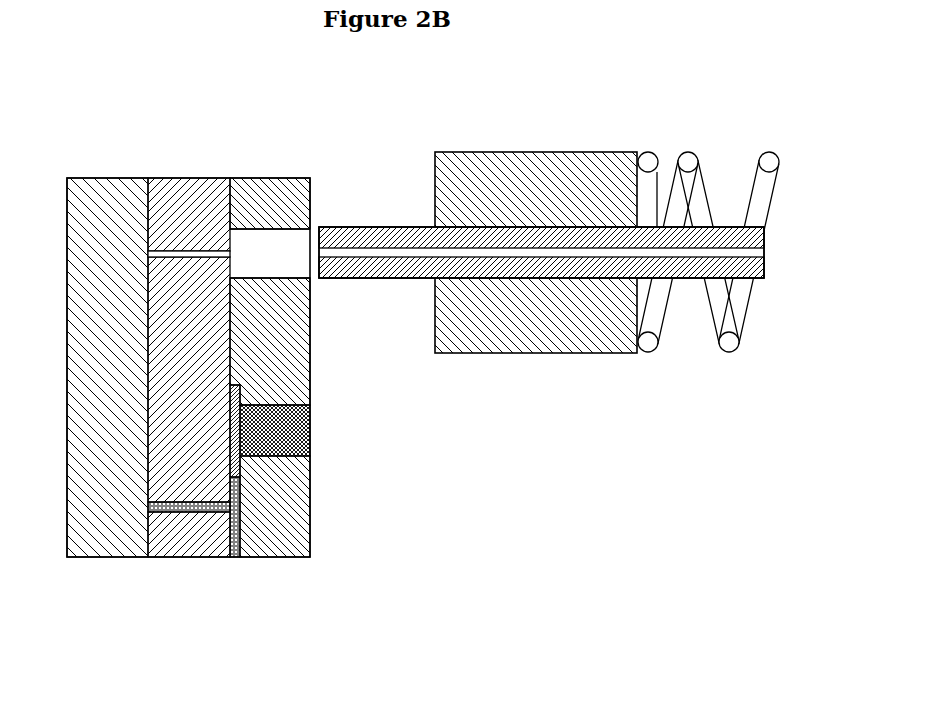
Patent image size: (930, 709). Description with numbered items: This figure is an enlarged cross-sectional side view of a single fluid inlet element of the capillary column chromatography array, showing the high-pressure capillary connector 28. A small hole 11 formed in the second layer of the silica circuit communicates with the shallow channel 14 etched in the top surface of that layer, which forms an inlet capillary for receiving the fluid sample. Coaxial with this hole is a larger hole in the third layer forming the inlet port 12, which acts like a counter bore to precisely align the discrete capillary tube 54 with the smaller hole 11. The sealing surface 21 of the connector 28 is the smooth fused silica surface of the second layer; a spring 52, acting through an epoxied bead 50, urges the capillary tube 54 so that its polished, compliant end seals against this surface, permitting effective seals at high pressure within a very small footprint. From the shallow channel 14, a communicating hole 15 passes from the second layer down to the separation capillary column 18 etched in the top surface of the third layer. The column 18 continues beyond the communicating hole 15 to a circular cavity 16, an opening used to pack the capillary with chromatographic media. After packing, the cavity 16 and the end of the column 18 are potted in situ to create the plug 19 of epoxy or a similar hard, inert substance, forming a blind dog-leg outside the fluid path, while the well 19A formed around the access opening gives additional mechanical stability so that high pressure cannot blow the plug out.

The hole 11 is at (188, 250).
The inlet port 12 is at (303, 228).
The shallow channel 14 is at (148, 315).
The communicating hole 15 is at (185, 512).
The circular cavity 16 is at (290, 457).
The separation capillary column 18 is at (235, 557).
The plug 19 is at (310, 415).
The well 19A is at (242, 393).
The sealing surface 21 is at (230, 242).
The high-pressure capillary connector 28 is at (572, 137).
The epoxied bead 50 is at (530, 355).
The spring 52 is at (662, 327).
The discrete capillary tube 54 is at (365, 280).